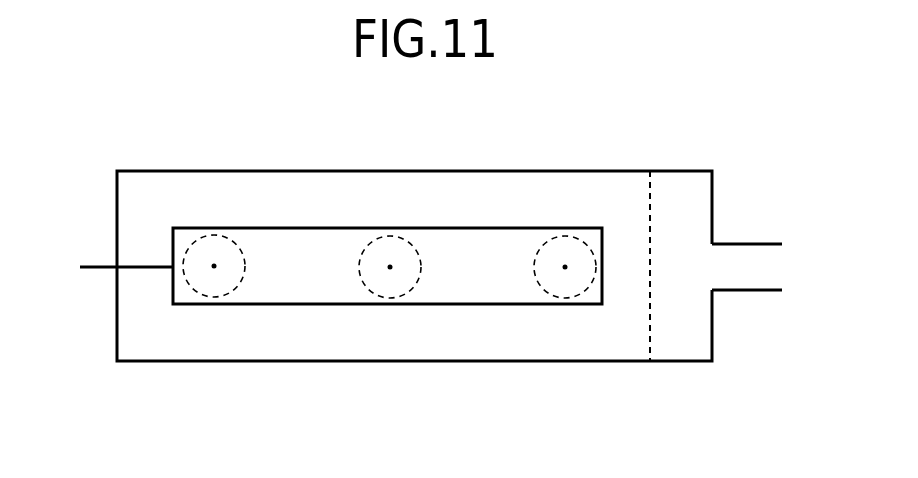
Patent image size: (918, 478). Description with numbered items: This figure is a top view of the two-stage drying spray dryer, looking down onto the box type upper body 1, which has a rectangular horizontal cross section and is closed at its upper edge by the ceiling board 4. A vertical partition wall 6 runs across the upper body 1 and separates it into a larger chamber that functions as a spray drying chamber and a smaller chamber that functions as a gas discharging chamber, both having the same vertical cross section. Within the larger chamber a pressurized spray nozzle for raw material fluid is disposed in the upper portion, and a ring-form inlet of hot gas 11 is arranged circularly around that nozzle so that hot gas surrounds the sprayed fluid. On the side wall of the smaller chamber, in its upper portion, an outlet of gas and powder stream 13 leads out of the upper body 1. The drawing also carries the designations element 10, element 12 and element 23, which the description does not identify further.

The upper body 1 is at (413, 171).
The ceiling board 4 is at (623, 340).
The vertical partition wall 6 is at (650, 227).
The heater 10 is at (214, 267).
The ring-form inlet of hot gas 11 is at (238, 288).
The inlet pipe 12 is at (93, 267).
The outlet of gas and powder stream 13 is at (740, 244).
The heater block 23 is at (465, 304).